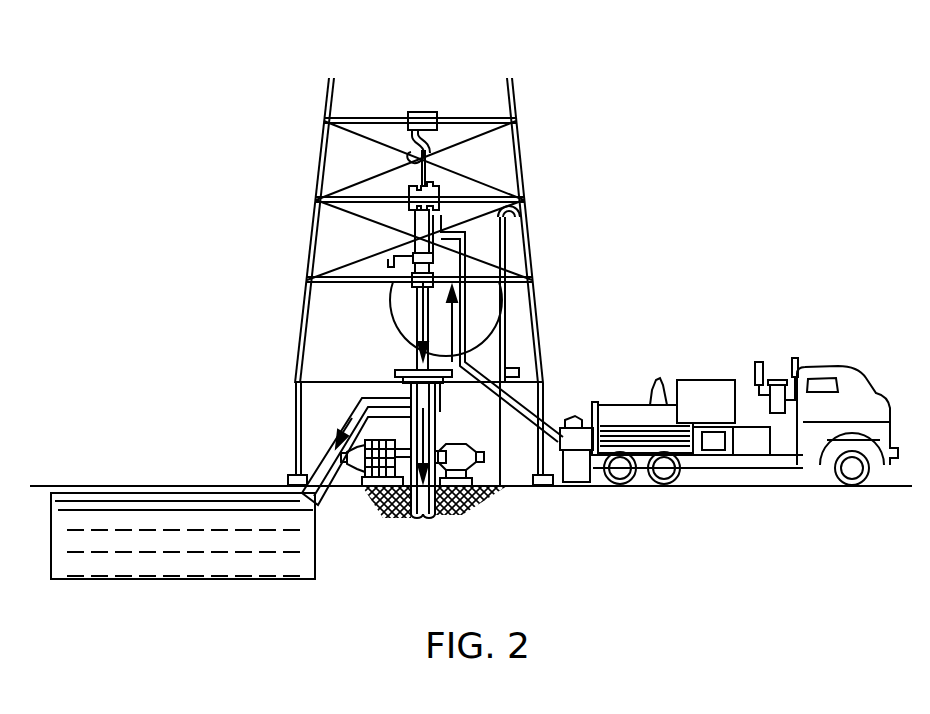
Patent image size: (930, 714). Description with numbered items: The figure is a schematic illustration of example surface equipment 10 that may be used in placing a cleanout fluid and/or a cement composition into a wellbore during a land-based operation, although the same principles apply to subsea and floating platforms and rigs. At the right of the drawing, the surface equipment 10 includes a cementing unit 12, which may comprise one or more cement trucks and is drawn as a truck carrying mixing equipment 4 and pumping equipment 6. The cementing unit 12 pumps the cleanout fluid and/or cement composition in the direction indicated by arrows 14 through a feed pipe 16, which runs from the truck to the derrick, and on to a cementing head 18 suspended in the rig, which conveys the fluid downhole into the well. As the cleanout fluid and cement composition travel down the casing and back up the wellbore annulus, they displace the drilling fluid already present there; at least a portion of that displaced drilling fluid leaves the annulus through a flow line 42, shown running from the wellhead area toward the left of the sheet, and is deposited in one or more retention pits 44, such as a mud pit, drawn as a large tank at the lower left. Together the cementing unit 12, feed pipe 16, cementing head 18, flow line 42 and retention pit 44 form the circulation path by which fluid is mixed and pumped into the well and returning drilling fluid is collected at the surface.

The surface equipment 10 is at (750, 82).
The cementing head 18 is at (460, 185).
The arrows 14 is at (420, 312).
The feed pipe 16 is at (532, 410).
The flow line 42 is at (333, 470).
The retention pit 44 is at (130, 579).
The cementing unit 12 is at (762, 482).
The pumping equipment 6 is at (577, 436).
The mixing equipment 4 is at (715, 442).